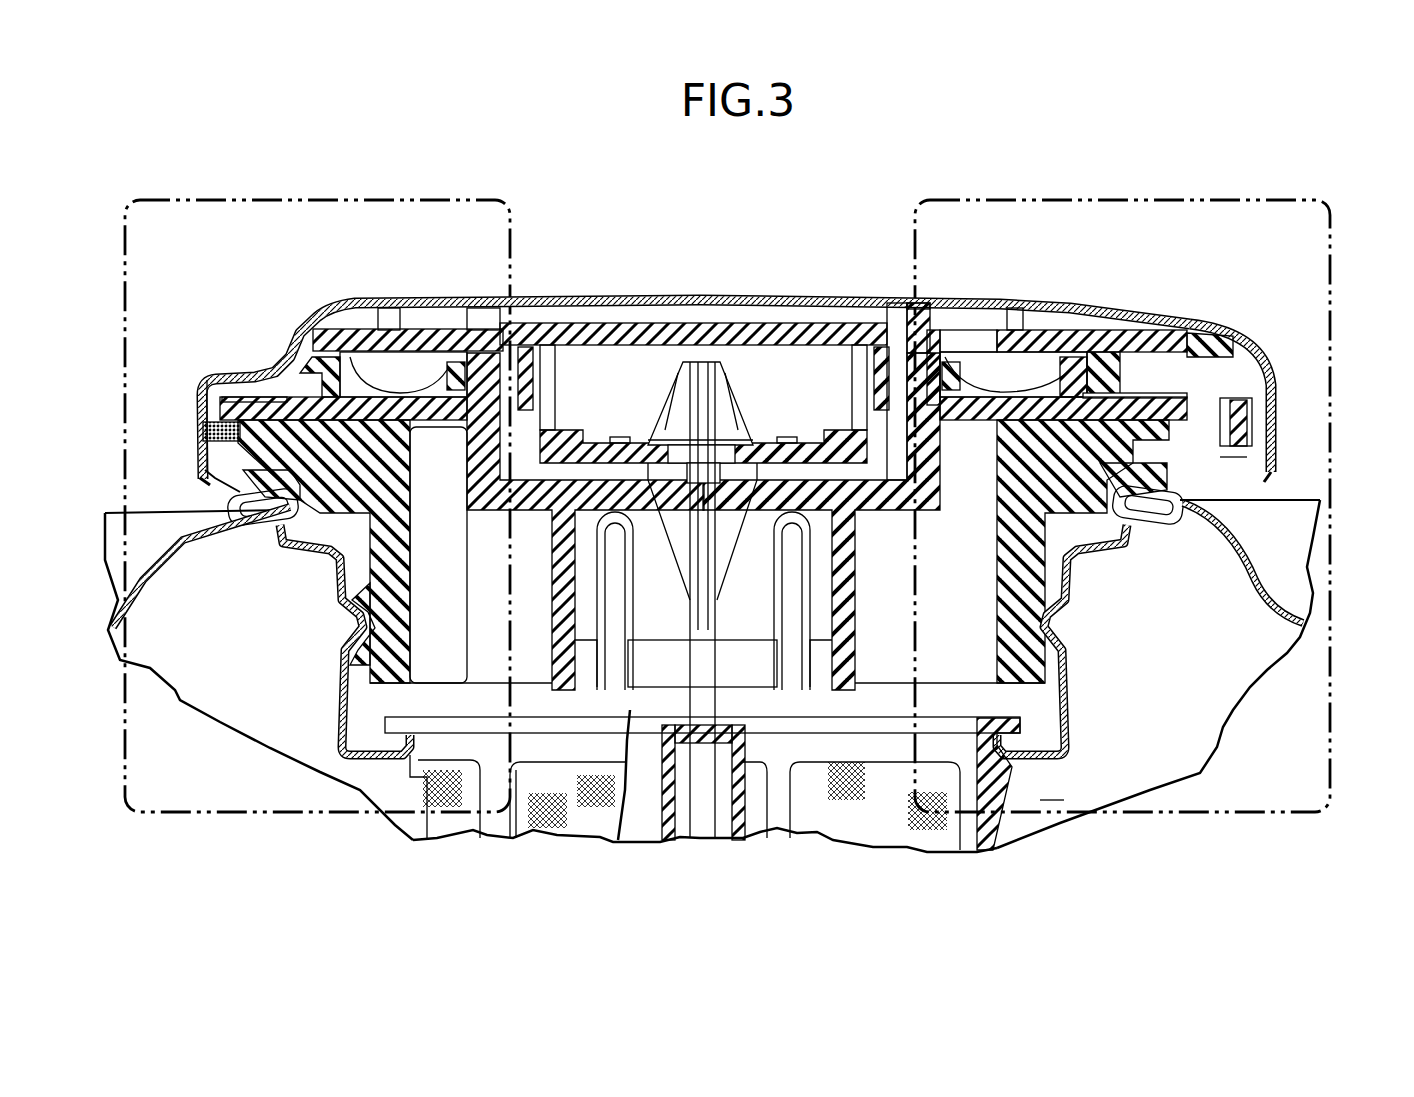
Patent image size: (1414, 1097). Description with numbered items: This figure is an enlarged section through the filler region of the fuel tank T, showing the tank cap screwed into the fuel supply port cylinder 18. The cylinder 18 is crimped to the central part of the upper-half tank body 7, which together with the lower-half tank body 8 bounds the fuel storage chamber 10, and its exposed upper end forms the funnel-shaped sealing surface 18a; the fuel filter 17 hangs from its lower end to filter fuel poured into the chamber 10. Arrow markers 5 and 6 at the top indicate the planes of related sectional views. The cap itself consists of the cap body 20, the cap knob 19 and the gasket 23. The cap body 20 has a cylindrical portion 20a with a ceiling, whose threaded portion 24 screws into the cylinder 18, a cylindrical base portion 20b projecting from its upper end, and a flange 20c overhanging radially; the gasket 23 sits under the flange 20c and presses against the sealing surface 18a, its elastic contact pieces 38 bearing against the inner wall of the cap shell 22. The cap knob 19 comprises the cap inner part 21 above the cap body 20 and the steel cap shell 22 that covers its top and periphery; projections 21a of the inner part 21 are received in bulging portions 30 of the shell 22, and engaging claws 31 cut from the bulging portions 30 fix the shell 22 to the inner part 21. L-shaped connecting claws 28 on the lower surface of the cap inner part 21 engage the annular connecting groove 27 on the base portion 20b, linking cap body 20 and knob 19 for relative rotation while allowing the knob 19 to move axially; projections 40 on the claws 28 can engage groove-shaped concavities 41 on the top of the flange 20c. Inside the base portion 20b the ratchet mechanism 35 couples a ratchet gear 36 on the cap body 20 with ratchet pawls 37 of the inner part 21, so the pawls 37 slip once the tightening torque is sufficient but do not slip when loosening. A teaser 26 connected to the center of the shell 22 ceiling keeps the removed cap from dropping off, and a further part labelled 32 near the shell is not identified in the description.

The section line 5 is at (513, 263).
The section line 6 is at (913, 263).
The upper-half tank body 7 is at (197, 460).
The lower-half tank body 8 is at (116, 357).
The fuel storage chamber 10 is at (1052, 789).
The fuel filter 17 is at (443, 827).
The fuel supply port cylinder 18 is at (1065, 662).
The sealing surface 18a is at (300, 478).
The cap knob 19 is at (730, 297).
The cap body 20 is at (332, 518).
The cylindrical portion 20a is at (410, 587).
The cylindrical base portion 20b is at (365, 355).
The flange 20c is at (210, 420).
The cap inner part 21 is at (1095, 372).
The projections 21a is at (1240, 338).
The cap shell 22 is at (627, 297).
The gasket 23 is at (287, 547).
The threaded portion 24 is at (352, 655).
The teaser 26 is at (707, 695).
The connecting groove 27 is at (1092, 372).
The connecting claws 28 is at (1133, 387).
The bulging portions 30 is at (1272, 468).
The engaging claws 31 is at (1268, 392).
The seal member 32 is at (1264, 482).
The ratchet mechanism 35 is at (435, 162).
The ratchet gear 36 is at (456, 360).
The ratchet pawls 37 is at (378, 368).
The elastic contact pieces 38 is at (208, 420).
The projections 40 is at (1140, 397).
The concavities 41 is at (282, 397).
The fuel tank T is at (1268, 582).